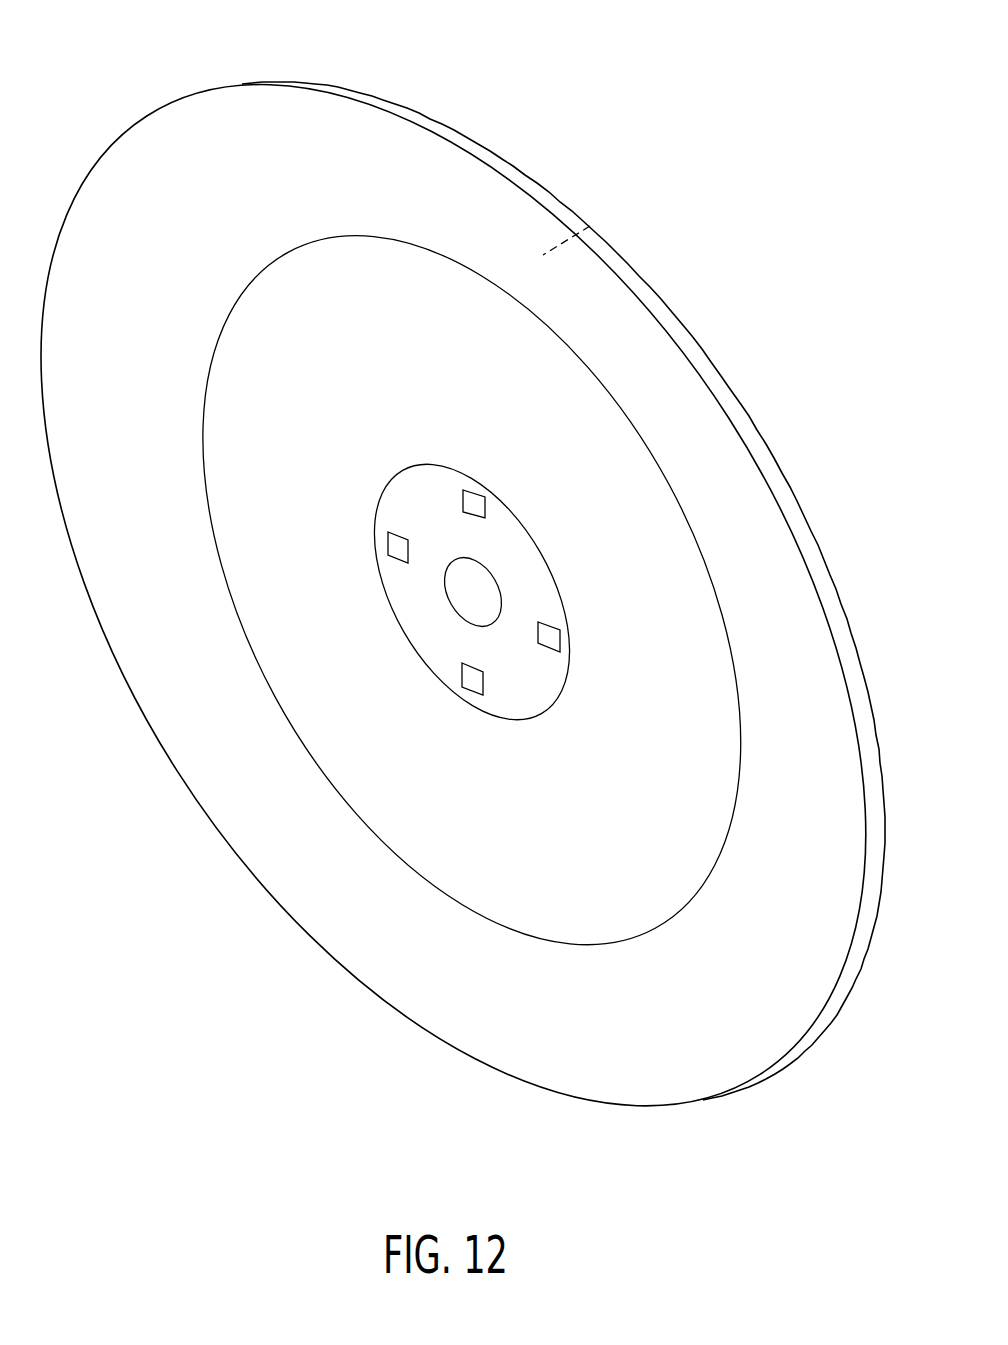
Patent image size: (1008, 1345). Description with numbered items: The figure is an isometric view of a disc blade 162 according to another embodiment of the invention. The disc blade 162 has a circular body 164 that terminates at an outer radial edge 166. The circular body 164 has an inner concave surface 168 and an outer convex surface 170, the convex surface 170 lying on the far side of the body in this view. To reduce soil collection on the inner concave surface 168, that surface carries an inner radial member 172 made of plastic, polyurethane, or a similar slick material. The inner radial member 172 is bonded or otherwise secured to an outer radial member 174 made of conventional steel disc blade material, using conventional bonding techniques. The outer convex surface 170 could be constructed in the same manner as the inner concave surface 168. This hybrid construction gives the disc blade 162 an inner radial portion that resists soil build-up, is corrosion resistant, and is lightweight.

The disc blade 162 is at (170, 90).
The circular body 164 is at (588, 948).
The outer radial edge 166 is at (582, 1098).
The inner concave surface 168 is at (282, 881).
The outer convex surface 170 is at (590, 226).
The inner radial member 172 is at (713, 860).
The outer radial member 174 is at (143, 529).